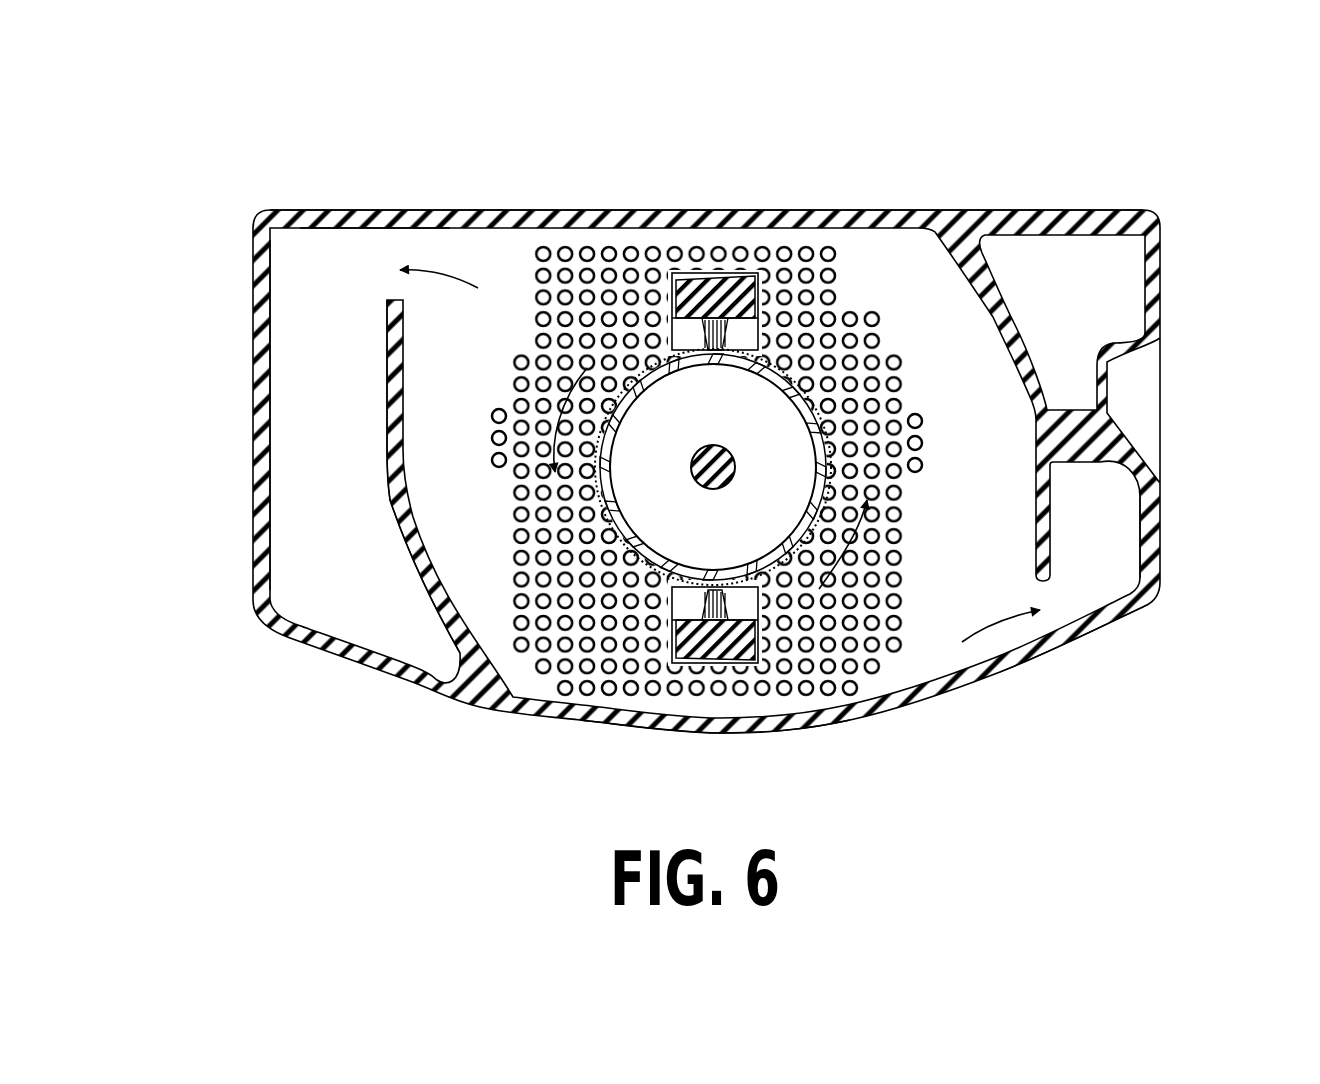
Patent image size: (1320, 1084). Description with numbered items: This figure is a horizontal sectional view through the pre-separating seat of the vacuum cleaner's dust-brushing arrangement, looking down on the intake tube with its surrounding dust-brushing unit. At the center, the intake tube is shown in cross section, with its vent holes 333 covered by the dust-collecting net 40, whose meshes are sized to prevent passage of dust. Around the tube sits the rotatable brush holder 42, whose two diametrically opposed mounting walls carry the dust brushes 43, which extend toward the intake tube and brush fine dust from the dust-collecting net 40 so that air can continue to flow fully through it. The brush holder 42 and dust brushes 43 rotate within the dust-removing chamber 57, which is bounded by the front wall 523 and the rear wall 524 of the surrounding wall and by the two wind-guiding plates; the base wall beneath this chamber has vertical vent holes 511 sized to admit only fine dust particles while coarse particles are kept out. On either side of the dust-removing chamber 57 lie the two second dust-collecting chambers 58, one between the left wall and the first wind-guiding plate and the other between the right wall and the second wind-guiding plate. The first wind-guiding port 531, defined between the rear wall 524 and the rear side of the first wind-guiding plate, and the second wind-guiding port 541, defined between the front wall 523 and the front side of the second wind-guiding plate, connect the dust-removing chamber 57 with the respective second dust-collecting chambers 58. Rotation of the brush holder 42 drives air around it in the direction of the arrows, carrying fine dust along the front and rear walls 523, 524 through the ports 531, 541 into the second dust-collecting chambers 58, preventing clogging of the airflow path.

The dust-collecting net 40 is at (787, 370).
The rotatable brush holder 42 is at (712, 283).
The dust brushes 43 is at (668, 328).
The dust-removing chamber 57 is at (465, 548).
The second dust-collecting chambers 58 is at (292, 452).
The vent holes 333 is at (844, 466).
The vertical vent holes 511 is at (893, 652).
The front wall 523 is at (737, 733).
The rear wall 524 is at (775, 212).
The first wind-guiding port 531 is at (387, 252).
The second wind-guiding port 541 is at (1045, 598).